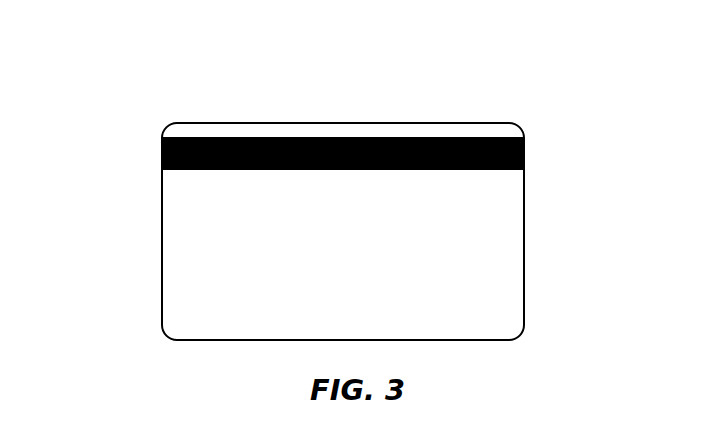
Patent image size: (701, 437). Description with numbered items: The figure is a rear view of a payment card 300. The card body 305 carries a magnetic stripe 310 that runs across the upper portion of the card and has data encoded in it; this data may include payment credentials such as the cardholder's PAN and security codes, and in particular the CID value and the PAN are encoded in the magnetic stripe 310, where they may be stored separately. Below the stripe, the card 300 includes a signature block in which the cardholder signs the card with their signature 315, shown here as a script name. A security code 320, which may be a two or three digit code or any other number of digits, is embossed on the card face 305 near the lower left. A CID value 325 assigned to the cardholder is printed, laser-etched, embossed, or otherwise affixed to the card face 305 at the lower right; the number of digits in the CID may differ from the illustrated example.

The card 300 is at (158, 116).
The card body 305 is at (302, 132).
The magnetic stripe 310 is at (545, 152).
The signature 315 is at (206, 236).
The security code 320 is at (250, 302).
The CID value 325 is at (452, 278).